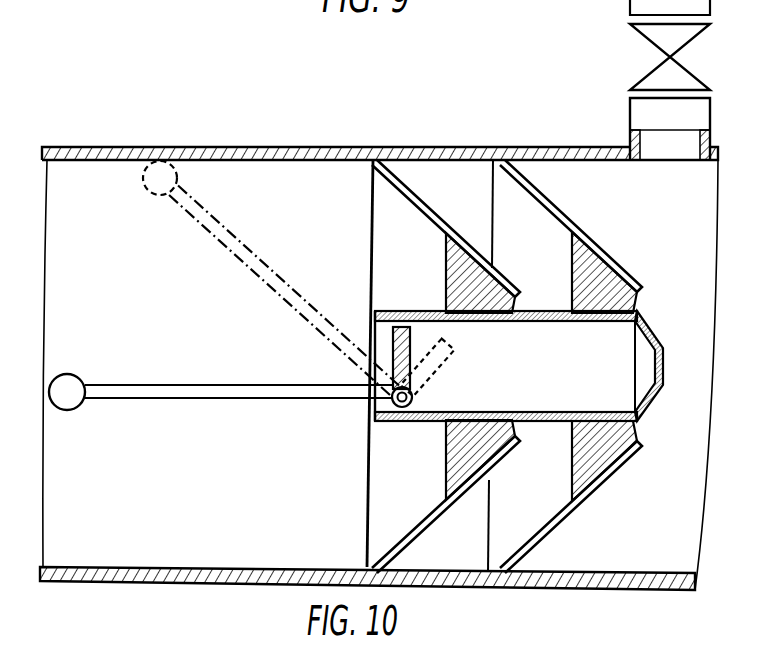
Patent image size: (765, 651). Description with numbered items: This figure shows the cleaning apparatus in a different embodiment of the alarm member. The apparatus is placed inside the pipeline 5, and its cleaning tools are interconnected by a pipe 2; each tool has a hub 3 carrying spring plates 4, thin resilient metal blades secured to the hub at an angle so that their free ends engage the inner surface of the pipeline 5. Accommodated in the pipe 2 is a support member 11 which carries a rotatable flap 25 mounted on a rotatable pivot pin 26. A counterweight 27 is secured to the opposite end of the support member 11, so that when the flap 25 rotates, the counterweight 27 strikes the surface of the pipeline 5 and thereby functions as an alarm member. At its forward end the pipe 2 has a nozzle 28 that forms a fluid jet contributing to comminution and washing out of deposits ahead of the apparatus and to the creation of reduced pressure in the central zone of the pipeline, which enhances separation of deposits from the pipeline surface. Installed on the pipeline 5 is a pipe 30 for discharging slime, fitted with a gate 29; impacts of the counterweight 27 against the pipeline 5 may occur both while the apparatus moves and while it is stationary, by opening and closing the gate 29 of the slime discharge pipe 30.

The pipe 2 is at (531, 384).
The hub 3 is at (588, 455).
The spring plates 4 is at (456, 238).
The pipeline 5 is at (257, 152).
The support member 11 is at (228, 395).
The rotatable flap 25 is at (392, 342).
The rotatable pivot pin 26 is at (402, 410).
The counterweight 27 is at (68, 398).
The nozzle 28 is at (657, 390).
The gate 29 is at (662, 77).
The pipe for discharging slime 30 is at (641, 117).